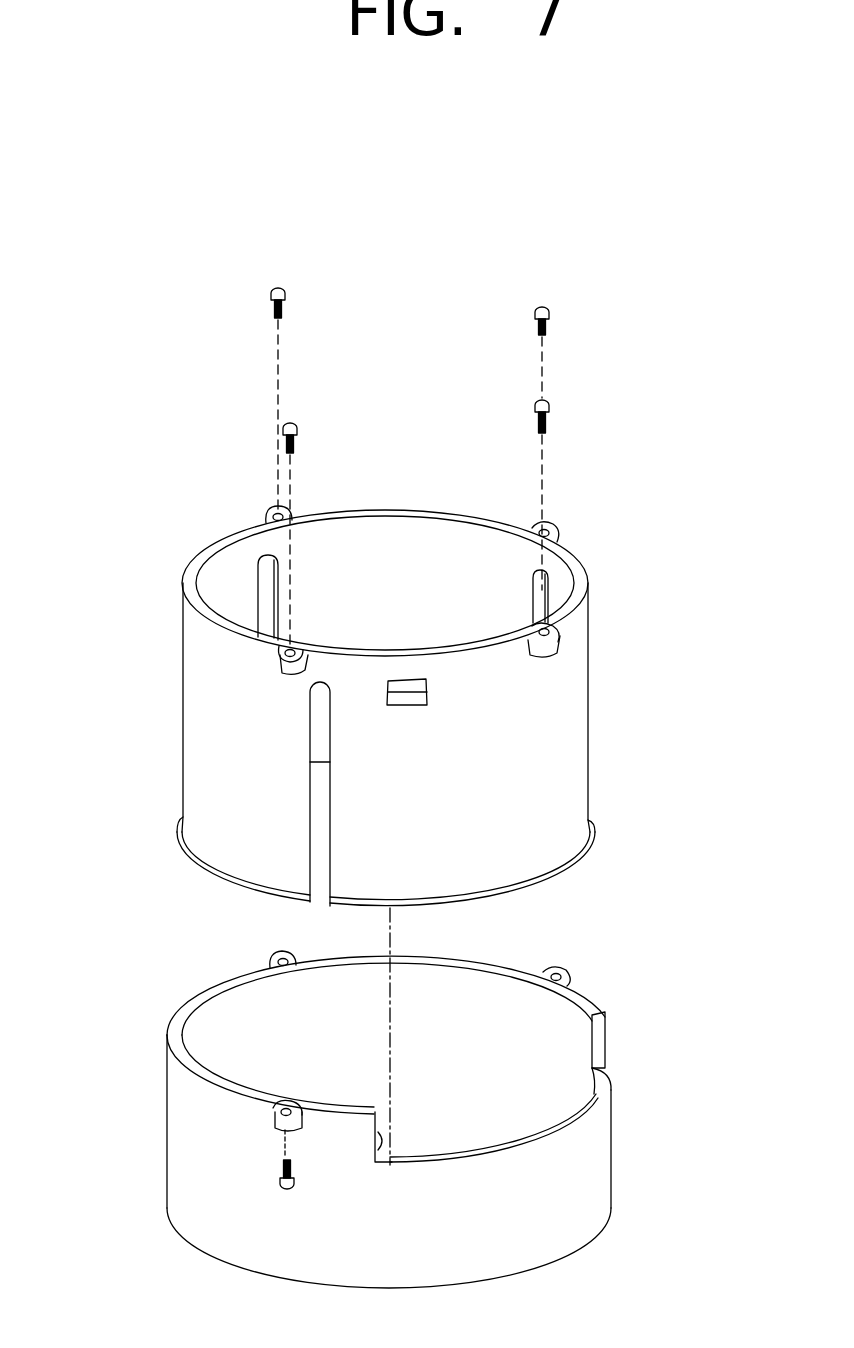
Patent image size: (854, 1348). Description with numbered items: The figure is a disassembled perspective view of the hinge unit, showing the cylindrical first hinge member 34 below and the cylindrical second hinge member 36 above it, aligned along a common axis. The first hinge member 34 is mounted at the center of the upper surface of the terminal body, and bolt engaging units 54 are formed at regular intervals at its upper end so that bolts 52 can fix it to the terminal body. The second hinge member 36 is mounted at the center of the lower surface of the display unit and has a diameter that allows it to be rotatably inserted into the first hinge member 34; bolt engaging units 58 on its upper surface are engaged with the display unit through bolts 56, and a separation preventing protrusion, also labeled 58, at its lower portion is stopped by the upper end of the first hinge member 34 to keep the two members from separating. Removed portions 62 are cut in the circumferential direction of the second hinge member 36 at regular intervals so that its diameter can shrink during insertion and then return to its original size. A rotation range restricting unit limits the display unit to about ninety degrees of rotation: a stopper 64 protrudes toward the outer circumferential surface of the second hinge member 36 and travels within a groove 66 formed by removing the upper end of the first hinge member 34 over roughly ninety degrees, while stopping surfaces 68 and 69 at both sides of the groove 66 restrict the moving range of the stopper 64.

The first hinge member 34 is at (595, 1203).
The second hinge member 36 is at (553, 690).
The bolt 52 is at (282, 1177).
The bolt engaging unit 54 is at (570, 972).
The bolt 56 is at (548, 323).
The bolt engaging unit 58 is at (550, 532).
The removed portion 62 is at (258, 583).
The stopper 64 is at (407, 700).
The groove 66 is at (600, 1095).
The stopping surface 68 is at (598, 1040).
The stopping surface 69 is at (375, 1152).